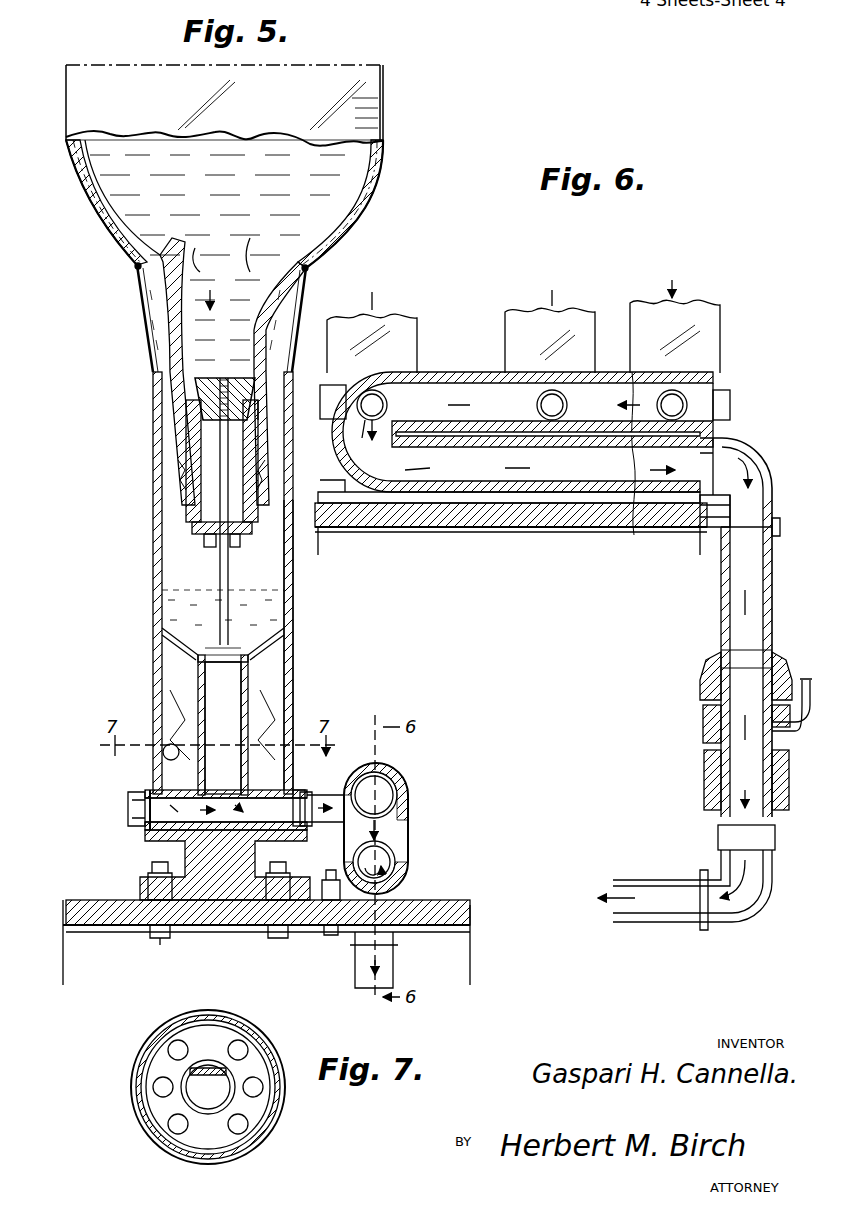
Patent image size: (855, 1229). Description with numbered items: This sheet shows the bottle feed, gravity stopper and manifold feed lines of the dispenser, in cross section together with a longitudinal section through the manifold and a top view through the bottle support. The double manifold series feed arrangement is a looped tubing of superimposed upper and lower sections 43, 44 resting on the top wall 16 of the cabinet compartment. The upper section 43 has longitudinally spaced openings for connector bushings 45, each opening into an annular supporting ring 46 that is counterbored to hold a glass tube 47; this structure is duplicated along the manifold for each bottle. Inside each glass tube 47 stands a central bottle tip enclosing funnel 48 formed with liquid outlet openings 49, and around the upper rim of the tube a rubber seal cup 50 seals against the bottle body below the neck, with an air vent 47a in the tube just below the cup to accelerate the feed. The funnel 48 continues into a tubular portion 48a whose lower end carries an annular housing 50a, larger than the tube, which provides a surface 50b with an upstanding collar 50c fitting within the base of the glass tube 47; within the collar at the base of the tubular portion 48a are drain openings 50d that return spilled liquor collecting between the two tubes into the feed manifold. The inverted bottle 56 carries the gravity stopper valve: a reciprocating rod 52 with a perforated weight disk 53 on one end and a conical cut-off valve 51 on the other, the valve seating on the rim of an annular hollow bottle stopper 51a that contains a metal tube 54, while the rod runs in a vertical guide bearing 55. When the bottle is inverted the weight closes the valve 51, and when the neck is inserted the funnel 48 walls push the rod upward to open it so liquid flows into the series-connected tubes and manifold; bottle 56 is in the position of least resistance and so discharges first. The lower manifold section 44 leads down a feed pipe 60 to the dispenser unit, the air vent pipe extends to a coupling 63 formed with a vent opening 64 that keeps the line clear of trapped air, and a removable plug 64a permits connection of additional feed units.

In FIG. 5, the top wall 16 is at (455, 905).
In FIG. 6, the top wall 16 is at (511, 517).
In FIG. 5, the upper manifold section 43 is at (400, 772).
In FIG. 6, the upper manifold section 43 is at (445, 385).
In FIG. 5, the lower manifold section 44 is at (408, 862).
In FIG. 6, the lower manifold section 44 is at (430, 478).
In FIG. 5, the connector bushing 45 is at (360, 768).
In FIG. 5, the annular supporting ring 46 is at (300, 788).
In FIG. 6, the annular supporting ring 46 is at (330, 385).
In FIG. 5, the glass tube 47 is at (293, 666).
In FIG. 6, the glass tube 47 is at (378, 325).
In FIG. 7, the glass tube 47 is at (262, 1040).
In FIG. 5, the air vent 47a is at (292, 432).
In FIG. 5, the bottle tip enclosing funnel 48 is at (272, 610).
In FIG. 5, the tubular portion 48a is at (248, 710).
In FIG. 7, the tubular portion 48a is at (200, 1095).
In FIG. 5, the liquid outlet openings 49 is at (268, 644).
In FIG. 5, the rubber seal cup 50 is at (306, 278).
In FIG. 5, the annular housing 50a is at (150, 838).
In FIG. 7, the annular housing 50a is at (178, 1152).
In FIG. 5, the surface 50b is at (150, 792).
In FIG. 5, the upstanding collar 50c is at (165, 745).
In FIG. 7, the upstanding collar 50c is at (268, 1125).
In FIG. 5, the drain openings 50d is at (220, 822).
In FIG. 7, the drain openings 50d is at (184, 1072).
In FIG. 5, the conical cut-off valve 51 is at (198, 382).
In FIG. 5, the annular hollow bottle stopper 51a is at (190, 420).
In FIG. 5, the reciprocating rod 52 is at (224, 583).
In FIG. 5, the perforated weight disk 53 is at (222, 721).
In FIG. 5, the metal tube 54 is at (206, 547).
In FIG. 5, the vertical guide bearing 55 is at (237, 547).
In FIG. 5, the bottle 56 is at (383, 190).
In FIG. 5, the feed pipe 60 is at (393, 965).
In FIG. 6, the feed pipe 60 is at (772, 565).
In FIG. 6, the coupling 63 is at (798, 655).
In FIG. 6, the vent opening 64 is at (806, 735).
In FIG. 5, the plug 64a is at (128, 810).